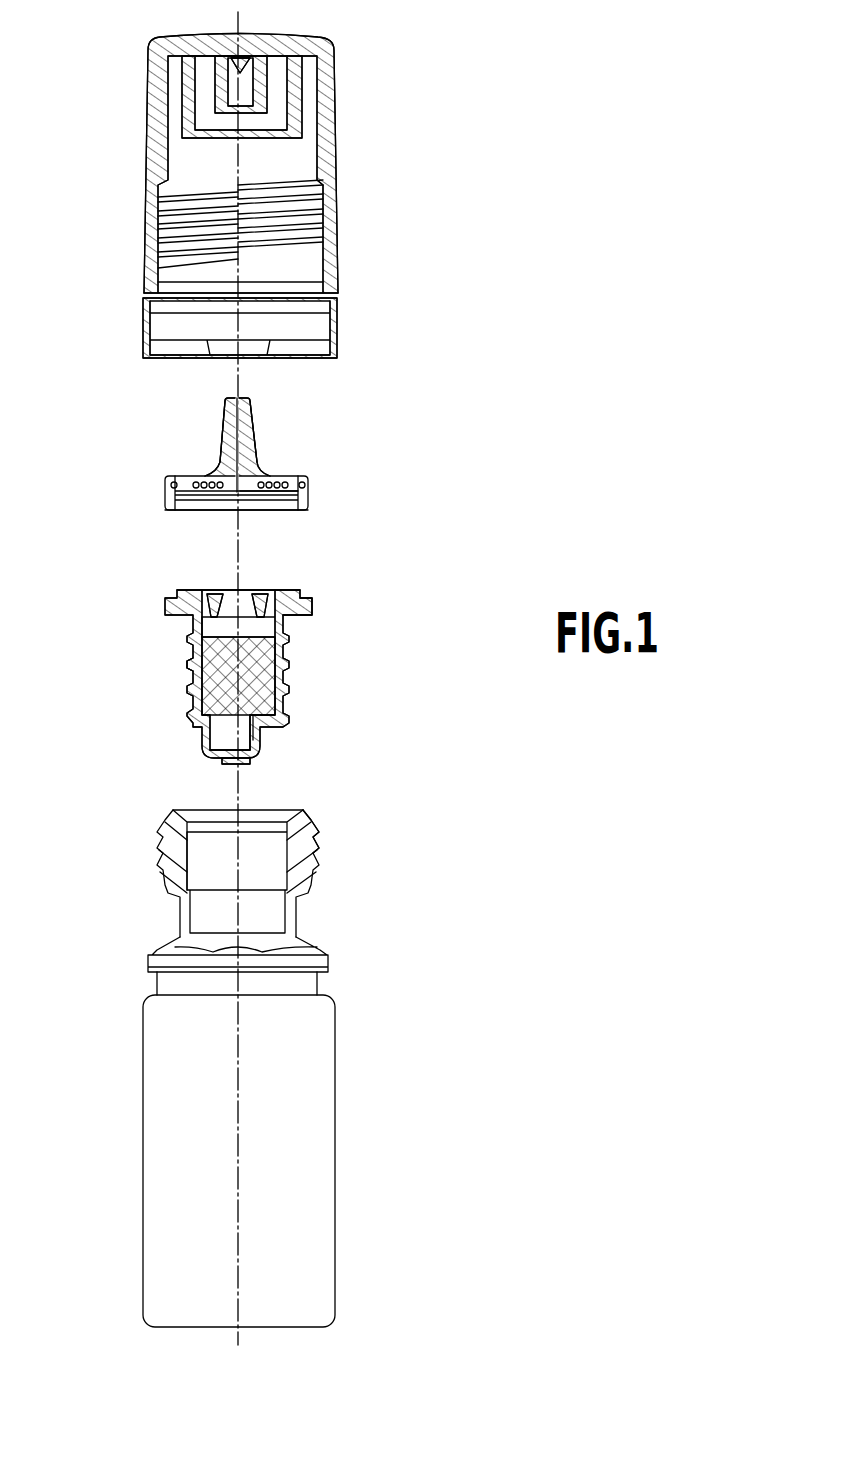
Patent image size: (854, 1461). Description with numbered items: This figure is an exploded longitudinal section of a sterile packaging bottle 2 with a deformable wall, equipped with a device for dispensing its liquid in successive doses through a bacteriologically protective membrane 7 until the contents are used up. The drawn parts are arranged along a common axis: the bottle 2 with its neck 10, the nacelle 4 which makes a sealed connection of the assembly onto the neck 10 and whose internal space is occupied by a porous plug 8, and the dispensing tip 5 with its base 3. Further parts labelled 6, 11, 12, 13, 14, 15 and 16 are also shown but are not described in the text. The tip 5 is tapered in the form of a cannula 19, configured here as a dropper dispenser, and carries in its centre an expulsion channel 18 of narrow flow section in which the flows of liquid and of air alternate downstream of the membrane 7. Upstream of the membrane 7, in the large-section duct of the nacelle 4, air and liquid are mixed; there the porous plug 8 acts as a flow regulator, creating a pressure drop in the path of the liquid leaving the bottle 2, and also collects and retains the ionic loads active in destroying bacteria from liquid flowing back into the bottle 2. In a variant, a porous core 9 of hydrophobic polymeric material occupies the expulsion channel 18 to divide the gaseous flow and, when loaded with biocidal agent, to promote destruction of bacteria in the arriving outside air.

The bottle 2 is at (224, 1068).
The base 3 is at (262, 500).
The nacelle 4 is at (248, 677).
The tip 5 is at (223, 466).
The cap 6 is at (150, 84).
The membrane 7 is at (182, 511).
The porous plug 8 is at (283, 686).
The porous core 9 is at (218, 630).
The neck 10 is at (210, 873).
The stopper bottom outlet 11 is at (230, 762).
The neck thread 12 is at (318, 850).
The bottom outlet channel 13 is at (260, 735).
The stopper flange 14 is at (308, 617).
The sealing rib 15 is at (188, 664).
The stopper top rim 16 is at (226, 589).
The expulsion channel 18 is at (229, 440).
The cannula 19 is at (256, 430).